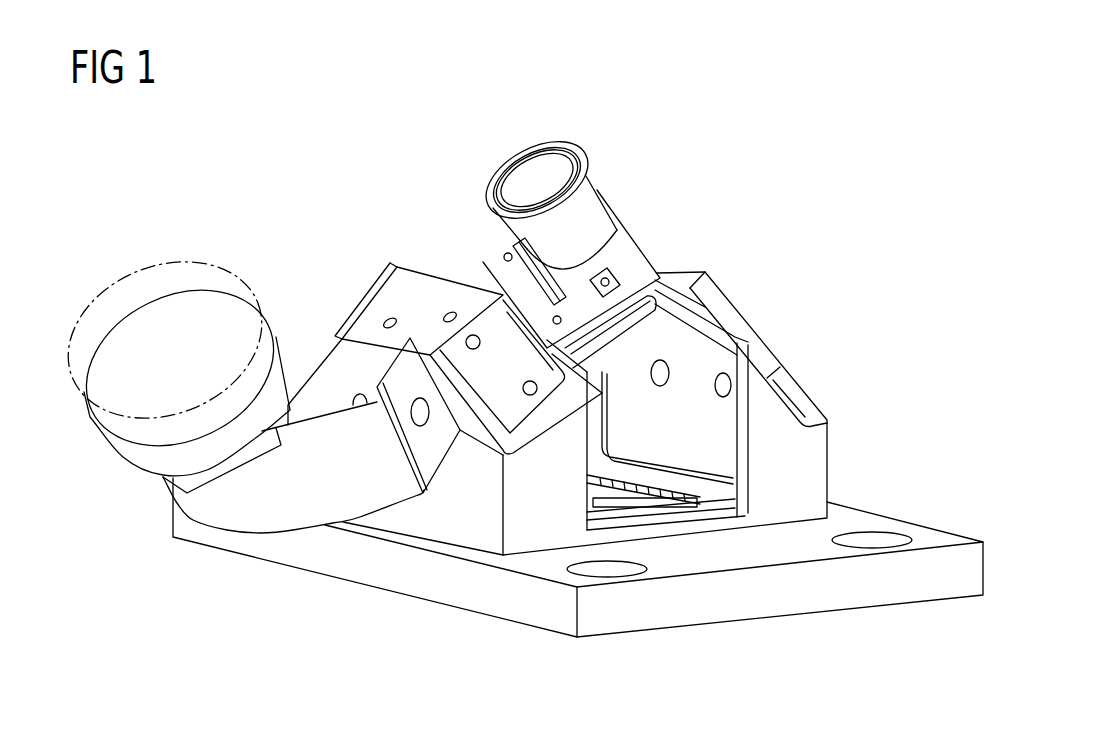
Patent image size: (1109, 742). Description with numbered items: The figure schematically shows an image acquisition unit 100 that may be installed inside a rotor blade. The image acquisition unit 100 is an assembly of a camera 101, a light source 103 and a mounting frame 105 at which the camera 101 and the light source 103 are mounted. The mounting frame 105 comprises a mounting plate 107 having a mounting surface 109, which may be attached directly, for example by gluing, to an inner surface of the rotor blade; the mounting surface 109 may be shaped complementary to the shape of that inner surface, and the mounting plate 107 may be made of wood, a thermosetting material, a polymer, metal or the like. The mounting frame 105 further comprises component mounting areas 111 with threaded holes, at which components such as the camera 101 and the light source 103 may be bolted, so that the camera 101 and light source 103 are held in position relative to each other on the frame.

The image acquisition unit 100 is at (792, 119).
The camera 101 is at (623, 230).
The light source 103 is at (187, 310).
The mounting frame 105 is at (815, 460).
The mounting plate 107 is at (810, 598).
The mounting surface 109 is at (645, 637).
The component mounting areas 111 is at (333, 360).